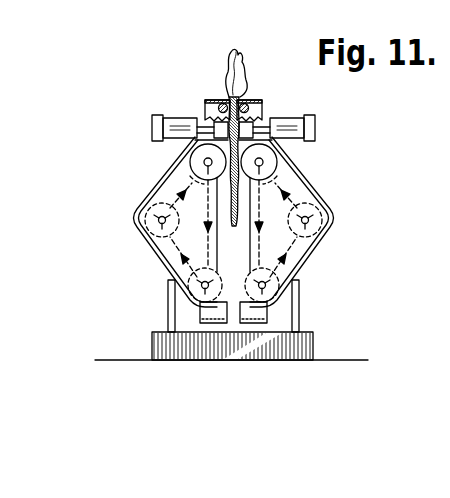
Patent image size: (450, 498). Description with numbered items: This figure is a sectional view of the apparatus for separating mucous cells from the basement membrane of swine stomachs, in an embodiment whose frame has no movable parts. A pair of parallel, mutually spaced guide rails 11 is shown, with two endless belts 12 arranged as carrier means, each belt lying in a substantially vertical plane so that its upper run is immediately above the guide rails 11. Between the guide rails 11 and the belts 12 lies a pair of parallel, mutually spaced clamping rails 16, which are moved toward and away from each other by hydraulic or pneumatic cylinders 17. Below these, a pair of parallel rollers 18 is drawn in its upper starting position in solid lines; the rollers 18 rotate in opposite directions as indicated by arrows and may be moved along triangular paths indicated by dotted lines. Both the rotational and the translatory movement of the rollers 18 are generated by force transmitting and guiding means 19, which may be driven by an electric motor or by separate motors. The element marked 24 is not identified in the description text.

The guide rails 11 is at (207, 108).
The endless belts 12 is at (213, 99).
The clamping rails 16 is at (196, 141).
The hydraulic or pneumatic cylinders 17 is at (152, 130).
The rollers 18 is at (188, 177).
The force transmitting and guiding means 19 is at (155, 258).
The flame 24 is at (219, 64).